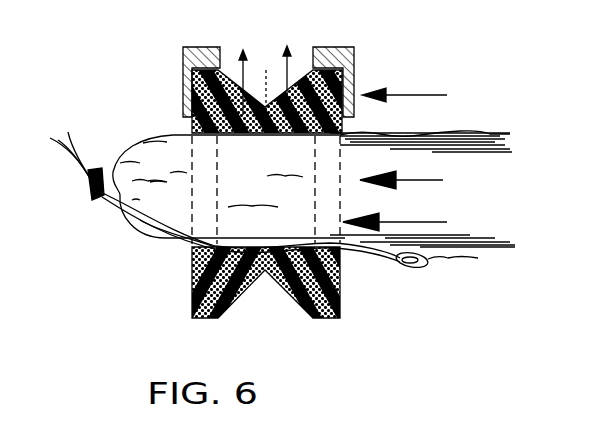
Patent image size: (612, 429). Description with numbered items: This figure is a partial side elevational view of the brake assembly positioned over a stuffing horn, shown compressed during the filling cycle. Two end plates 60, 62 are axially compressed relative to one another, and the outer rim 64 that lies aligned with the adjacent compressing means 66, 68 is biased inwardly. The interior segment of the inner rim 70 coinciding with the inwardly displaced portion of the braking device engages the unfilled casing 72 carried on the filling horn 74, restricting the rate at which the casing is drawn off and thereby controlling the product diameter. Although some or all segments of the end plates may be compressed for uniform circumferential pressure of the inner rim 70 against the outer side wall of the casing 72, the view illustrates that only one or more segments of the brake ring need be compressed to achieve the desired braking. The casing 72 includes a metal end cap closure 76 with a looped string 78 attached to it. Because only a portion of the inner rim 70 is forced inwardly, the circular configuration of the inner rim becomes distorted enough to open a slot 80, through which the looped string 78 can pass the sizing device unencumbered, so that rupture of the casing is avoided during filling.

The end plate 60 is at (190, 288).
The end plate 62 is at (340, 285).
The outer rim 64 is at (290, 83).
The compressing means 66 is at (182, 80).
The compressing means 68 is at (353, 62).
The inner rim 70 is at (192, 128).
The unfilled casing 72 is at (433, 128).
The filling horn 74 is at (492, 248).
The metal end cap closure 76 is at (83, 205).
The looped string 78 is at (428, 268).
The slot 80 is at (190, 250).